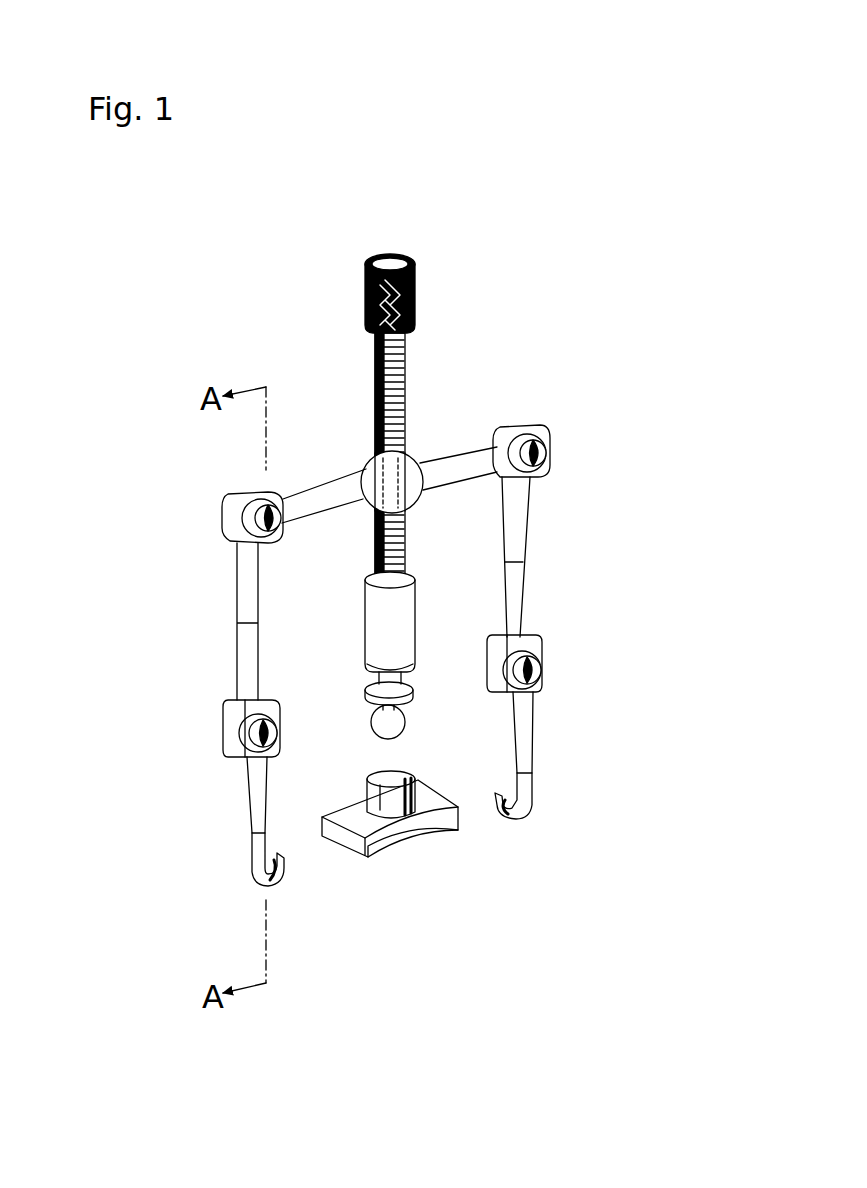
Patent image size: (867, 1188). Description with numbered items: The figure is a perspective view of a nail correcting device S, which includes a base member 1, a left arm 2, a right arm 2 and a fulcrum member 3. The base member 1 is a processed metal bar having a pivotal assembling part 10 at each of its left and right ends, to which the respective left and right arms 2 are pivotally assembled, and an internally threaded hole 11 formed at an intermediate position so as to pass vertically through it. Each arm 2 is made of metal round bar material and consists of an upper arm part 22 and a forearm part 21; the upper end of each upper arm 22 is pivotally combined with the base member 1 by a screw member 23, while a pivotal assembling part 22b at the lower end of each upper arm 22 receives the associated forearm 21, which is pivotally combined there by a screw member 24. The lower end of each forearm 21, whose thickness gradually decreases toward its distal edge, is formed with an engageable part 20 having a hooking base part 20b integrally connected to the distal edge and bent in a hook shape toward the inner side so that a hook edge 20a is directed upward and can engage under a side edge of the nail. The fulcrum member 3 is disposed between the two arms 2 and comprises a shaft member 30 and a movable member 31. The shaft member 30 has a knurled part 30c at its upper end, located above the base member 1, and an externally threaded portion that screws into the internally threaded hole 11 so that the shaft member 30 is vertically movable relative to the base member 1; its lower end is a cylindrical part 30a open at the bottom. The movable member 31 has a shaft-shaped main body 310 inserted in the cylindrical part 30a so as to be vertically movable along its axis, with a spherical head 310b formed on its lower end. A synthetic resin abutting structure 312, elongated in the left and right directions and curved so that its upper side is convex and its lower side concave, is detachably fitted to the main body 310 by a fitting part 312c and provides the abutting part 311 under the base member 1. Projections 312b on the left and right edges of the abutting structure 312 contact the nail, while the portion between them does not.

The correcting device S is at (498, 297).
The base member 1 is at (448, 452).
The arm 2 is at (237, 623).
The fulcrum member 3 is at (398, 258).
The pivotal assembling part 10 is at (210, 480).
The internally threaded hole 11 is at (358, 470).
The engageable part 20 is at (280, 883).
The hook edge 20a is at (280, 852).
The hooking base part 20b is at (252, 858).
The forearm part 21 is at (250, 778).
The upper arm part 22 is at (233, 568).
The pivotal assembling part 22b is at (213, 712).
The screw member 23 is at (227, 523).
The screw member 24 is at (230, 737).
The shaft member 30 is at (375, 372).
The cylindrical part 30a is at (412, 630).
The knurled part 30c is at (415, 303).
The movable member 31 is at (363, 690).
The main body 310 is at (413, 693).
The spherical head 310b is at (400, 725).
The abutting part 311 is at (350, 853).
The abutting structure 312 is at (365, 855).
The projection 312b is at (453, 837).
The fitting part 312c is at (390, 800).